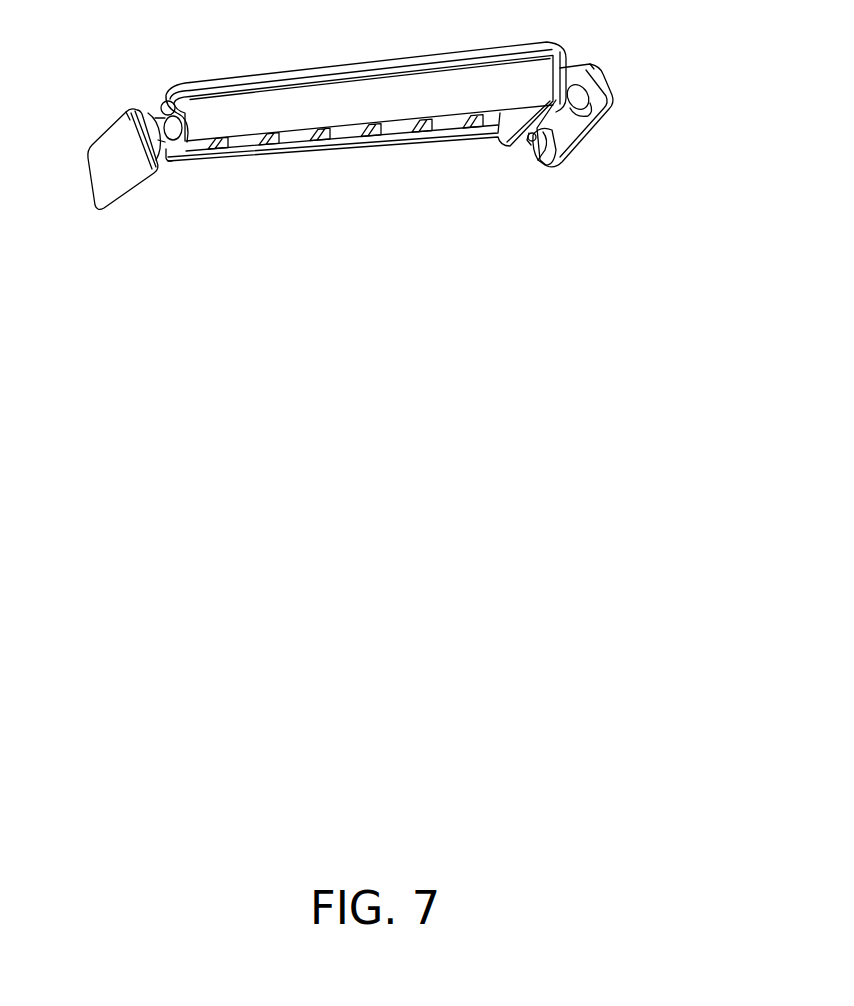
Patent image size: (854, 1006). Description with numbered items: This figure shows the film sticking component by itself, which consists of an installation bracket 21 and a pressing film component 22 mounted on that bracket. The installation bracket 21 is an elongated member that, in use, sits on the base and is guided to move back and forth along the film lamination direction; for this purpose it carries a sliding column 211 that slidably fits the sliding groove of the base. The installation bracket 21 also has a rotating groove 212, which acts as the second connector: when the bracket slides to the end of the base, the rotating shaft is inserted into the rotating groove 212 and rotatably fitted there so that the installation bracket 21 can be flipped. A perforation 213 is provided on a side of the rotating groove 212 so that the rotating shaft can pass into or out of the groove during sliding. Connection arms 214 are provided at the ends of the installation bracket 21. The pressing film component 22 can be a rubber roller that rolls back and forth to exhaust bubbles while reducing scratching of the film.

The installation bracket 21 is at (270, 80).
The pressing film component 22 is at (307, 110).
The sliding column 211 is at (582, 102).
The rotating groove 212 is at (557, 164).
The perforation 213 is at (535, 148).
The connection arm 214 is at (115, 180).